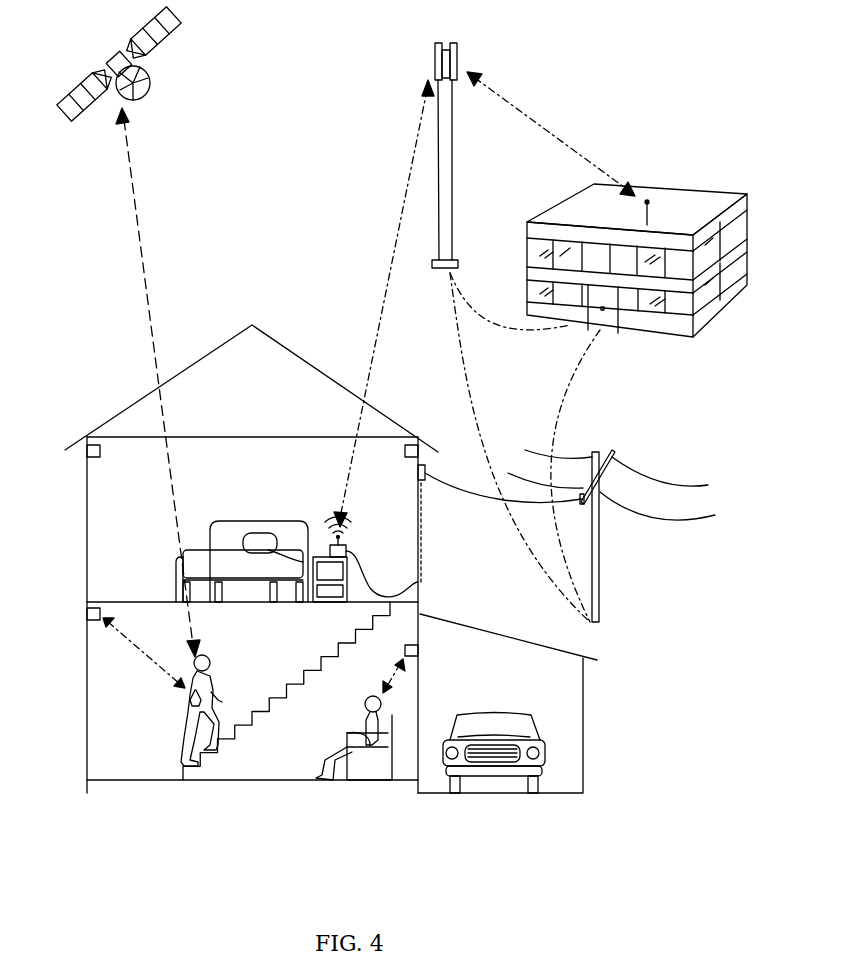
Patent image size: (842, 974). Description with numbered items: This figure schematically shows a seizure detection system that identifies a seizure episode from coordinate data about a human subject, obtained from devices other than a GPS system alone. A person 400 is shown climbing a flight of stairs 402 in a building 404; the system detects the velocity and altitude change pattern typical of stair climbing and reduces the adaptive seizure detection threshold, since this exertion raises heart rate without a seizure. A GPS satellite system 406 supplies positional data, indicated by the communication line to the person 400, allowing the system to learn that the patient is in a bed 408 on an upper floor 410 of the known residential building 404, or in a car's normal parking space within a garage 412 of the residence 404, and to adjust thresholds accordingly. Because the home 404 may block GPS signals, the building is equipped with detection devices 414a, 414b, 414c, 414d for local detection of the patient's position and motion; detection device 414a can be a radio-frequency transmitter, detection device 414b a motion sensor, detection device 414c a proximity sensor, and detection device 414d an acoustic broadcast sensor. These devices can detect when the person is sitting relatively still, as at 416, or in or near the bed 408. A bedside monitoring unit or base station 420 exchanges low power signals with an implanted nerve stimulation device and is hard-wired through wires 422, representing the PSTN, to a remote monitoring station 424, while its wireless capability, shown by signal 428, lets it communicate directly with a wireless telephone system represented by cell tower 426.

The person 400 is at (208, 655).
The flight of stairs 402 is at (258, 706).
The building 404 is at (131, 380).
The GPS satellite system 406 is at (108, 55).
The bed 408 is at (253, 524).
The upper floor 410 is at (108, 602).
The garage 412 is at (555, 698).
The detection device 414a is at (87, 452).
The detection device 414b is at (405, 454).
The detection device 414c is at (87, 614).
The detection device 414d is at (418, 650).
The person sitting relatively still 416 is at (386, 717).
The bedside monitoring unit or base station 420 is at (350, 548).
The wires 422 is at (643, 512).
The remote monitoring station 424 is at (673, 318).
The cell tower 426 is at (437, 60).
The wireless signal 428 is at (320, 515).